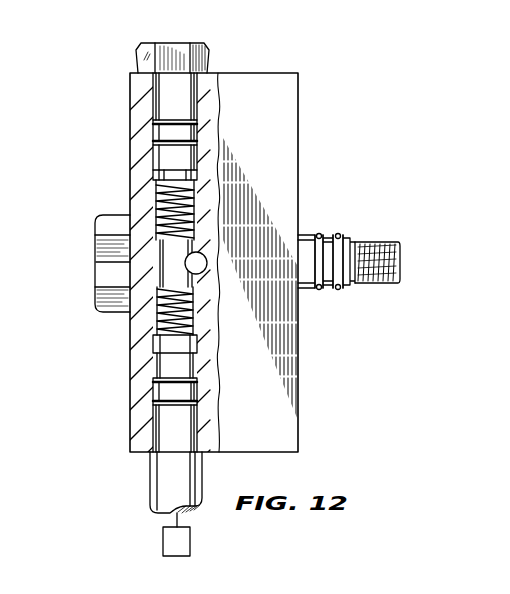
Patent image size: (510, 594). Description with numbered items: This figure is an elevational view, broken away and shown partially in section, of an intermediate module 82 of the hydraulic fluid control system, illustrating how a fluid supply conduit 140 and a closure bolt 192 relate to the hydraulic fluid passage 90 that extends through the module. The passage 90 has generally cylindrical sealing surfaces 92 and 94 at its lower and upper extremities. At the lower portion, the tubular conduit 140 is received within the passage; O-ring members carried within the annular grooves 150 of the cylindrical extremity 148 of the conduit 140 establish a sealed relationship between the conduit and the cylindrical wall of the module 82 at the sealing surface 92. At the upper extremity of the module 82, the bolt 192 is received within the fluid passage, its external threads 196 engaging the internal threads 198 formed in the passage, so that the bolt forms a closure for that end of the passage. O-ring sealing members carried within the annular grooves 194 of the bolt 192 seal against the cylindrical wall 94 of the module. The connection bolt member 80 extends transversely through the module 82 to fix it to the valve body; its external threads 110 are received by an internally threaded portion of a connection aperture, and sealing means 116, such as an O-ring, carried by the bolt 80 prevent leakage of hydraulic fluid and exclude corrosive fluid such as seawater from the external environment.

The intermediate module 82 is at (278, 112).
The closure bolt 192 is at (175, 52).
The connection bolt member 80 is at (115, 280).
The cylindrical sealing surface 94 is at (152, 96).
The annular grooves 194 is at (160, 133).
The internal threads 198 is at (160, 190).
The external threads 196 is at (165, 214).
The hydraulic fluid passage 90 is at (175, 259).
The cylindrical extremity 148 is at (165, 360).
The annular grooves 150 is at (160, 390).
The cylindrical sealing surface 92 is at (152, 436).
The fluid supply conduit 140 is at (165, 478).
The external threads 110 is at (367, 240).
The sealing means 116 is at (338, 290).